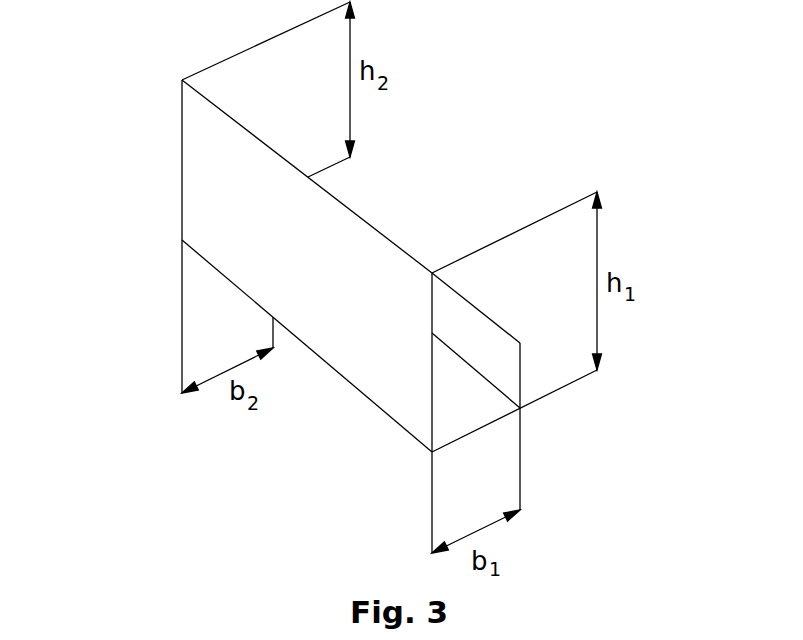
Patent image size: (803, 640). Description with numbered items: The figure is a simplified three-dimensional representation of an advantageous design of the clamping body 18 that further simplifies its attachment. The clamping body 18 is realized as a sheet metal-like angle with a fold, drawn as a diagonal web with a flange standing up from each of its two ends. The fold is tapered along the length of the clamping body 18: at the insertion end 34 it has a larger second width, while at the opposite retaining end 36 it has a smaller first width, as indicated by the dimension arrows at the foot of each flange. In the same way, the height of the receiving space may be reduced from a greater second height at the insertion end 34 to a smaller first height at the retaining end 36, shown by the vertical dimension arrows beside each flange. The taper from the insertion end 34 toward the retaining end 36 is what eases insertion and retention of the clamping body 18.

The clamping body 18 is at (382, 370).
The insertion end 34 is at (166, 231).
The retaining end 36 is at (606, 415).